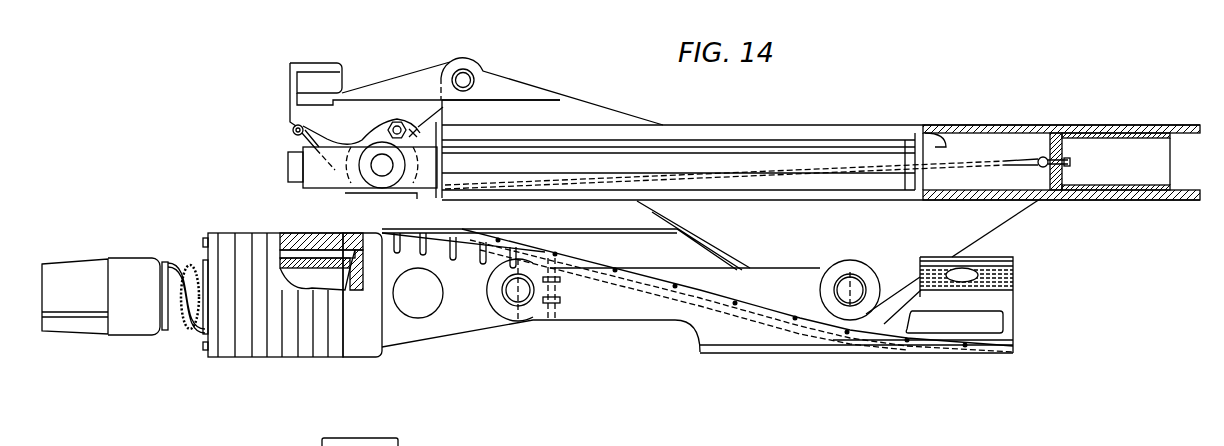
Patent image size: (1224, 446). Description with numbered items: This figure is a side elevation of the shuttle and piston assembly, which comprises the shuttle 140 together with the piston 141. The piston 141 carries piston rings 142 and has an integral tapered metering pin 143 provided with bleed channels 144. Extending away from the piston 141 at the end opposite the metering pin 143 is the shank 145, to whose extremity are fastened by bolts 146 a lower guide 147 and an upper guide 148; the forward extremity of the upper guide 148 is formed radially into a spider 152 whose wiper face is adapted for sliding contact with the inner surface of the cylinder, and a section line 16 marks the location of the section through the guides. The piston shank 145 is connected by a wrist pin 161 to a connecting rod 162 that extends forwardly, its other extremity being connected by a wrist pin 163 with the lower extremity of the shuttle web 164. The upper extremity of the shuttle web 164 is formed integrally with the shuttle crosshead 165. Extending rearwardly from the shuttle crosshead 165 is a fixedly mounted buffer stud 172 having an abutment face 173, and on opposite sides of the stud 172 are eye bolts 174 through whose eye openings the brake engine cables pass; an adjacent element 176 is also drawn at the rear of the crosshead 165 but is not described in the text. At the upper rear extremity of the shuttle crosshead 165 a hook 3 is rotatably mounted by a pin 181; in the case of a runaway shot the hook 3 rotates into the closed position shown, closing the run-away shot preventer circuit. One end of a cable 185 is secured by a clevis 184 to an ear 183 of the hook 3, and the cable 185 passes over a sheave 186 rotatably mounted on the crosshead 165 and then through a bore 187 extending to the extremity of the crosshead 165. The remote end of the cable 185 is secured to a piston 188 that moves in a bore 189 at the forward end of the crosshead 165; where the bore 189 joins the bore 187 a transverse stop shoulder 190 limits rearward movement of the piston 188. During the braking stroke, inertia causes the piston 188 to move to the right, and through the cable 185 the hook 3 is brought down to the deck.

The hook 3 is at (342, 75).
The pin 181 is at (471, 72).
The ear 183 is at (292, 127).
The clevis 184 is at (295, 135).
The cable 185 is at (330, 166).
The sheave 186 is at (358, 143).
The abutment face 173 is at (288, 159).
The stud 172 is at (303, 172).
The hub 176 is at (380, 178).
The eye bolts 174 is at (405, 178).
The shuttle 140 is at (796, 125).
The shuttle crosshead 165 is at (851, 137).
The bore 189 is at (970, 132).
The piston 188 is at (1050, 145).
The stop shoulder 190 is at (945, 148).
The bore 187 is at (932, 186).
The metering pin 143 is at (95, 263).
The bleed channels 144 is at (62, 318).
The piston rings 142 is at (228, 352).
The piston 141 is at (358, 350).
The shank 145 is at (442, 323).
The wrist pin 161 is at (523, 297).
The bolts 146 is at (560, 303).
The connecting rod 162 is at (628, 305).
The shuttle web 164 is at (975, 232).
The wrist pin 163 is at (857, 288).
The lower guide 147 is at (862, 356).
The upper guide 148 is at (897, 323).
The spider 152 is at (1013, 280).
The section line 16- 16 is at (684, 264).